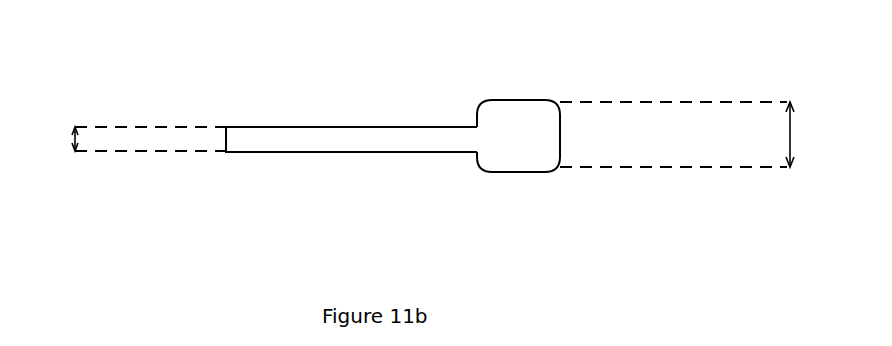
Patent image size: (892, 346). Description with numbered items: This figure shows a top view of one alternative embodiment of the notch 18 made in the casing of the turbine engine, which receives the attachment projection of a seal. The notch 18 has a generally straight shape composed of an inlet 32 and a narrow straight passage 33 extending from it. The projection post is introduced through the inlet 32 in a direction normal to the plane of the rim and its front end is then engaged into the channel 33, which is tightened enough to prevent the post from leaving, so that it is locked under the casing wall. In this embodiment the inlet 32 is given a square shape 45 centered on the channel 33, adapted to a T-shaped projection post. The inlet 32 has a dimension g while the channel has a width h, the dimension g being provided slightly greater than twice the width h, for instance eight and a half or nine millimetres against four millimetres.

The straight passage 33 is at (328, 136).
The inlet 32 is at (521, 91).
The square shape 45 is at (505, 141).
The notch 18 is at (590, 132).
The diameter of the inlet g is at (795, 136).
The width of the channel h is at (71, 139).